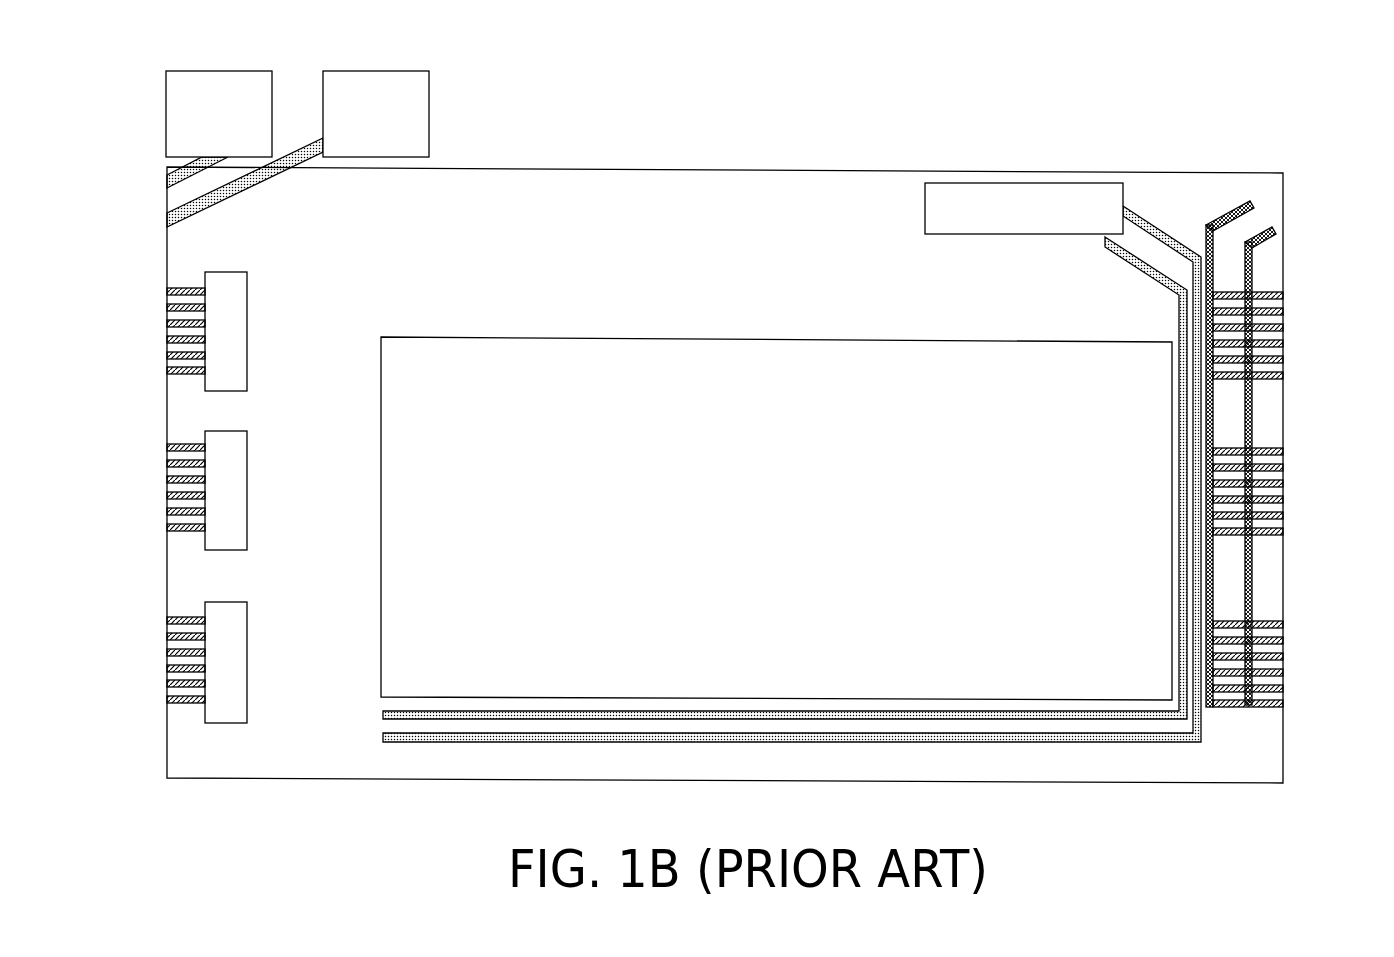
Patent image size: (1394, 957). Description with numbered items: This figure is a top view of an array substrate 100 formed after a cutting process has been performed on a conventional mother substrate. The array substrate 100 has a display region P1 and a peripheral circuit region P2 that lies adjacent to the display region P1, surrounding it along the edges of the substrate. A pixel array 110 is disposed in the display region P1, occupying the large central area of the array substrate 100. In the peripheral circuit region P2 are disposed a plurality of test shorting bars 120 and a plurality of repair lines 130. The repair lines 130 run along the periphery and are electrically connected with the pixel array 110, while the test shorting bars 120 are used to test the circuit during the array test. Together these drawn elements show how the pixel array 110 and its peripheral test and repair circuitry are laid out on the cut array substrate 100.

The array substrate 100 is at (1393, 849).
The pixel array 110 is at (394, 637).
The test shorting bars 120 is at (1217, 222).
The repair lines 130 is at (1140, 220).
The display region P1 is at (729, 611).
The peripheral circuit region P2 is at (878, 197).